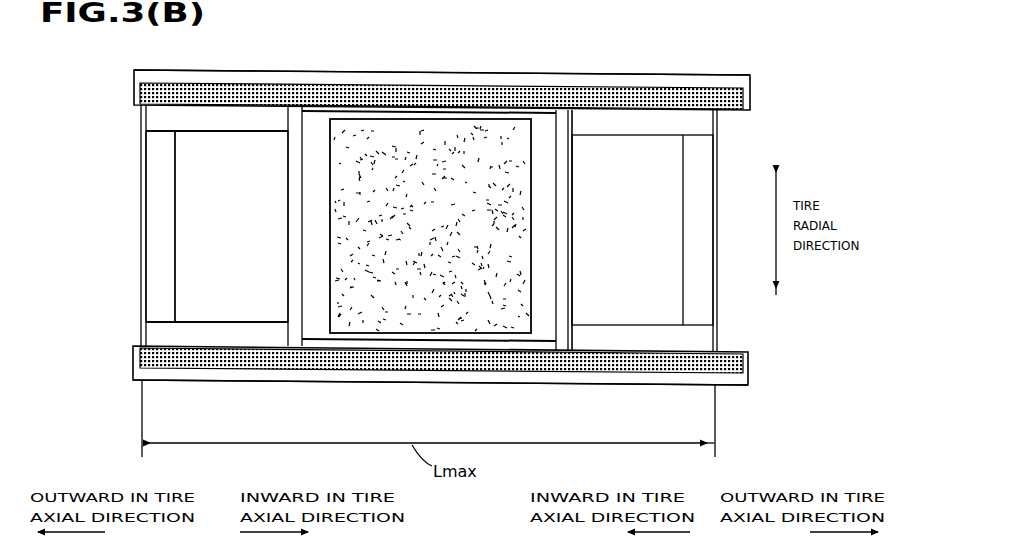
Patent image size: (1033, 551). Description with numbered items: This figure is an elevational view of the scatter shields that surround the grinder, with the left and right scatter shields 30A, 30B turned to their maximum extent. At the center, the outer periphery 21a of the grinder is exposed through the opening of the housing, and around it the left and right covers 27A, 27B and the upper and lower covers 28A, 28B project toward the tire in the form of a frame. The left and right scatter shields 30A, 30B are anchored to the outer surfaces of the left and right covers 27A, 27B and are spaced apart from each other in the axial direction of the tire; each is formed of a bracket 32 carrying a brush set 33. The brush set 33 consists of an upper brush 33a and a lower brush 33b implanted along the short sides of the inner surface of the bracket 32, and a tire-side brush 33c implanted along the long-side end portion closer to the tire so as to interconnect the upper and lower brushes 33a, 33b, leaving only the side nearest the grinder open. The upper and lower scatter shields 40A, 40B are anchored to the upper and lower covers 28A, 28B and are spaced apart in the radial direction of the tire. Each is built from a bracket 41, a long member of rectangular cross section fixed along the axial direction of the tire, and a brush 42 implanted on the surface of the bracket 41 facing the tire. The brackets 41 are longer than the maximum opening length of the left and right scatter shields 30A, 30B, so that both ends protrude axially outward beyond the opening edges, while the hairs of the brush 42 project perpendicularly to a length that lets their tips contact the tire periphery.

The outer periphery of the grinder 21a is at (508, 148).
The left cover 27A is at (296, 157).
The right cover 27B is at (560, 300).
The upper cover 28A is at (492, 112).
The lower cover 28B is at (468, 341).
The left scatter shield 30A is at (135, 165).
The right scatter shield 30B is at (724, 162).
The bracket 32 is at (140, 275).
The brush set 33 is at (179, 230).
The upper brush 33a is at (263, 124).
The lower brush 33b is at (258, 322).
The tire-side brush 33c is at (174, 192).
The upper scatter shield 40A is at (318, 70).
The lower scatter shield 40B is at (283, 390).
The bracket 41 is at (633, 76).
The brush 42 is at (737, 110).